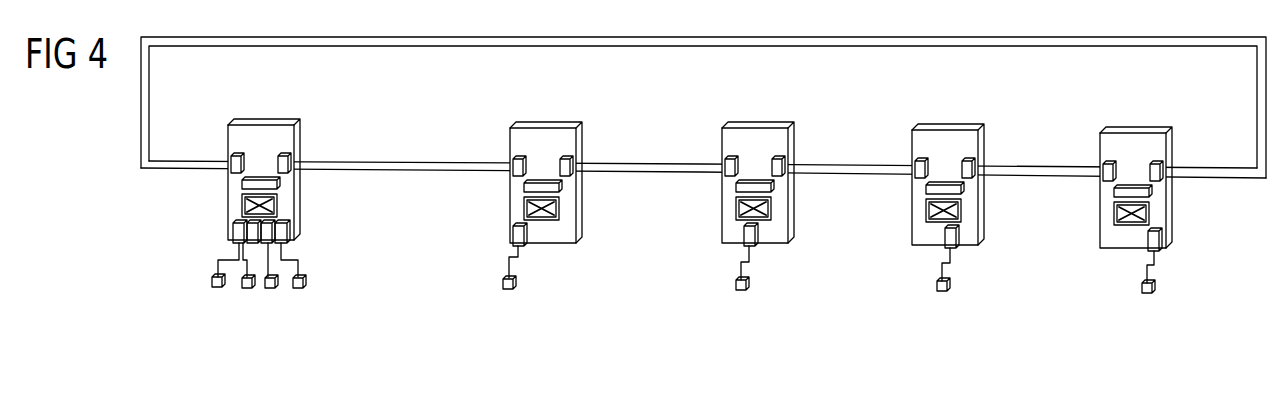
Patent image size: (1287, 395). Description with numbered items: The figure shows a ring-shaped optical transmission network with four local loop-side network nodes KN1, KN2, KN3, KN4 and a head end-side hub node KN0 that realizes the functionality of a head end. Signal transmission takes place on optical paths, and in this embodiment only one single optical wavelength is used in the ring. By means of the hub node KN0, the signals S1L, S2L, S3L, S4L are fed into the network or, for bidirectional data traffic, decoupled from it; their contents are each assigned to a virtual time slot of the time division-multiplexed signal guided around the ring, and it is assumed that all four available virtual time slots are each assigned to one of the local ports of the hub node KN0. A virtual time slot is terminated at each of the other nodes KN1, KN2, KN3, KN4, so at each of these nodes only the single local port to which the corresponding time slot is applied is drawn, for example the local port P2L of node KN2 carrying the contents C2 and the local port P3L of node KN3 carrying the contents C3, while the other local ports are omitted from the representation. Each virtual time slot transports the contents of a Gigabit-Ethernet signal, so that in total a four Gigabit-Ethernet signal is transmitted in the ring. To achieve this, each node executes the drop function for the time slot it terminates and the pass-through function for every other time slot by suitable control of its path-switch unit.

The hub network node KN0 is at (264, 150).
The network node KN1 is at (546, 217).
The network node KN2 is at (758, 219).
The network node KN3 is at (948, 220).
The network node KN4 is at (1136, 223).
The local port P2L is at (752, 250).
The local port P3L is at (953, 252).
The contents of virtual time slot C2 is at (749, 285).
The contents of virtual time slot C3 is at (950, 286).
The signal S1L is at (215, 288).
The signal S2L is at (247, 289).
The signal S3L is at (270, 289).
The signal S4L is at (299, 289).